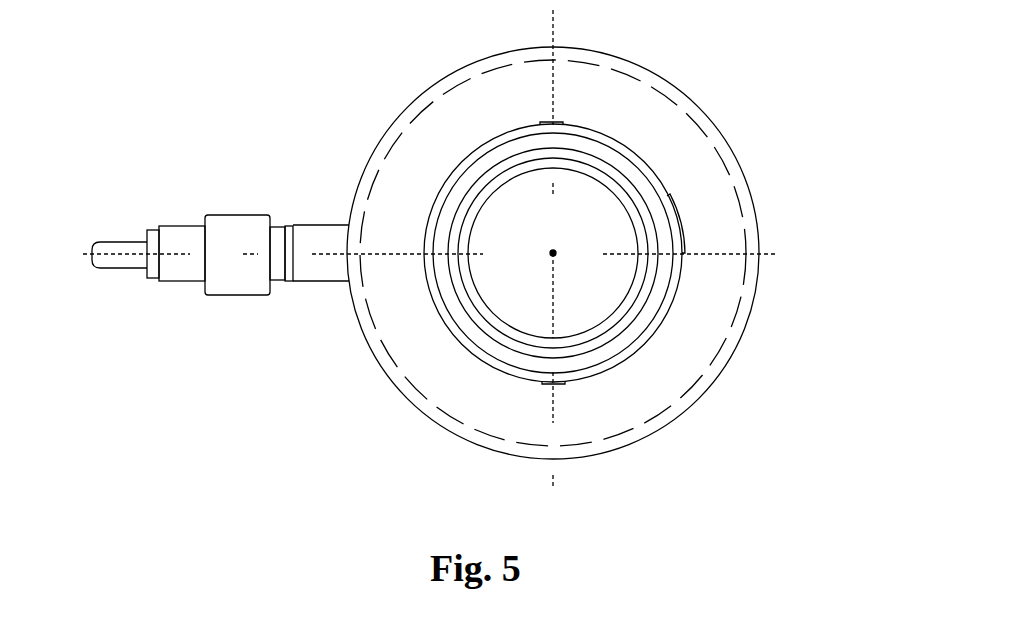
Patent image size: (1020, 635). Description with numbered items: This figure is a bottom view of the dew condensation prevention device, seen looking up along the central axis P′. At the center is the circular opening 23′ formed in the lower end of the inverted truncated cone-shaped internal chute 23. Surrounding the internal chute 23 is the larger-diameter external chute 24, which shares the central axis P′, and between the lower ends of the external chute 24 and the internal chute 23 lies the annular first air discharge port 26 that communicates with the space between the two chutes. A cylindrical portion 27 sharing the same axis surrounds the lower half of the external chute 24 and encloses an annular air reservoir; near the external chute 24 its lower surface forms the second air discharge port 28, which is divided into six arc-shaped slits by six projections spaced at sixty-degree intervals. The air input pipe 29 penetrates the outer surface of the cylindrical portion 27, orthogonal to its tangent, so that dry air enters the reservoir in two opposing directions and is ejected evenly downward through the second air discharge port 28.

The cylindrical portion 27 is at (712, 110).
The second air discharge port 28 is at (636, 152).
The external chute 24 is at (663, 218).
The first air discharge port 26 is at (653, 246).
The internal chute 23 is at (643, 273).
The cylindrical portion air input pipe 29 is at (233, 215).
The central axis P′ is at (550, 251).
The circular opening 23′ is at (521, 307).